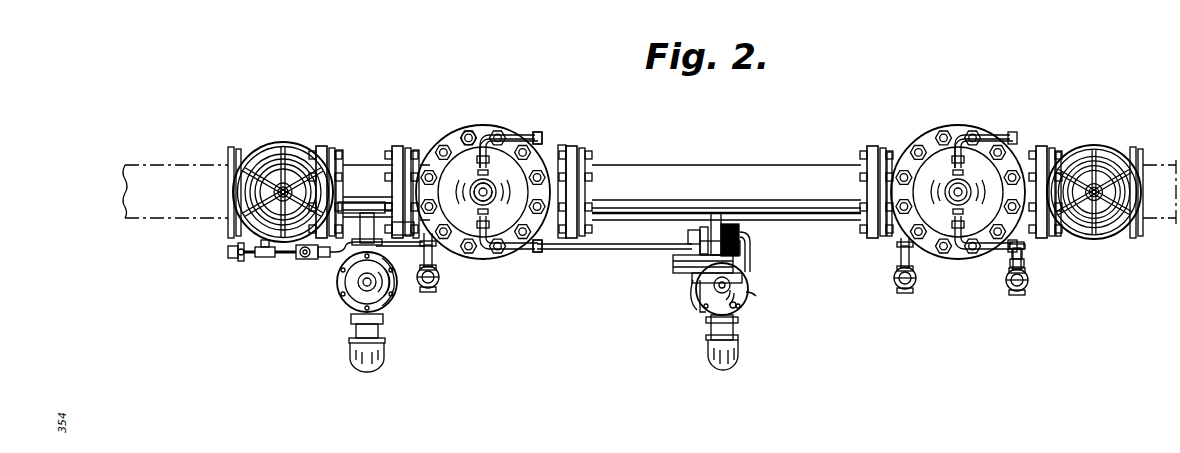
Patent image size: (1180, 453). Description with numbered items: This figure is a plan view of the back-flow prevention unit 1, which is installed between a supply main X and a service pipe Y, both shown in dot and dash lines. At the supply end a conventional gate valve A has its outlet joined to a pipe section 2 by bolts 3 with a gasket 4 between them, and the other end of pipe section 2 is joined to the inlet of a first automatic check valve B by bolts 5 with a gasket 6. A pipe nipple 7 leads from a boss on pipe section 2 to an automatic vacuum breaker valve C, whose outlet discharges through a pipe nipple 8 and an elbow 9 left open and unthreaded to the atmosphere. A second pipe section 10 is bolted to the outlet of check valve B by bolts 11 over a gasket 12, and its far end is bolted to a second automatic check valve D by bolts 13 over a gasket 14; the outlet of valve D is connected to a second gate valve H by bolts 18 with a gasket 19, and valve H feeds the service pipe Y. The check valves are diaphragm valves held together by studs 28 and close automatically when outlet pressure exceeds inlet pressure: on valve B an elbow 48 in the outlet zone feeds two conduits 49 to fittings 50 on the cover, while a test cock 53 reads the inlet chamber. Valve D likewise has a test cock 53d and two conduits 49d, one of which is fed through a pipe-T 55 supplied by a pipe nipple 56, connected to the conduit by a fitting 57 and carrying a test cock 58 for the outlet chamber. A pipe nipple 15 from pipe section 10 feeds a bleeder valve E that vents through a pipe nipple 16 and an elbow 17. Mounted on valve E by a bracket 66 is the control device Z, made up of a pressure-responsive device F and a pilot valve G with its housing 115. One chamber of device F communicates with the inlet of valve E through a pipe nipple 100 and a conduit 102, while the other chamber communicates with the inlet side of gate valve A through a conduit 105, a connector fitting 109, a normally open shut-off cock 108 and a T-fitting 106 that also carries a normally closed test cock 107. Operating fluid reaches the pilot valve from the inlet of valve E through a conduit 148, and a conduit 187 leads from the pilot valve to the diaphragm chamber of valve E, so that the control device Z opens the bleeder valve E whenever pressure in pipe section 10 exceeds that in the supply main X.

The supply main X is at (183, 170).
The service pipe Y is at (1168, 235).
The gate valve A is at (282, 143).
The first automatic check valve B is at (489, 117).
The automatic vacuum breaker valve C is at (393, 300).
The second automatic check valve D is at (968, 120).
The bleeder valve E is at (756, 303).
The pressure-responsive device F is at (664, 271).
The pilot valve G is at (730, 223).
The gate valve H is at (1104, 145).
The control device Z is at (734, 284).
The back-flow prevention unit 1 is at (829, 162).
The pipe section 2 is at (366, 169).
The bolts 3 is at (342, 147).
The gasket 4 is at (330, 144).
The bolts 5 is at (394, 146).
The gasket 6 is at (413, 147).
The pipe nipple 7 is at (387, 246).
The pipe nipple 8 is at (354, 333).
The elbow 9 is at (372, 371).
The second pipe section 10 is at (614, 158).
The bolts 11 is at (583, 145).
The gasket 12 is at (562, 144).
The bolts 13 is at (872, 144).
The gasket 14 is at (890, 147).
The pipe nipple 15 is at (713, 213).
The pipe nipple 16 is at (712, 330).
The elbow 17 is at (726, 368).
The bolts 18 is at (1060, 146).
The gasket 19 is at (1042, 144).
The studs 28 is at (464, 131).
The elbow 48 is at (539, 131).
The conduit 49 is at (511, 136).
The conduits 49d is at (985, 273).
The fitting 50 is at (475, 170).
The test cock 53 is at (441, 282).
The test cock 53d is at (905, 293).
The pipe-T 55 is at (1024, 266).
The pipe nipple 56 is at (1026, 249).
The fitting 57 is at (1024, 256).
The test cock 58 is at (1017, 295).
The bracket 66 is at (736, 308).
The pipe nipple 100 is at (698, 306).
The conduit 102 is at (686, 290).
The conduit 105 is at (595, 250).
The T-fitting 106 is at (266, 257).
The test cock 107 is at (230, 258).
The shut-off cock 108 is at (307, 259).
The connector fitting 109 is at (334, 259).
The pilot valve housing 115 is at (688, 238).
The conduit 148 is at (758, 255).
The conduit 187 is at (752, 288).